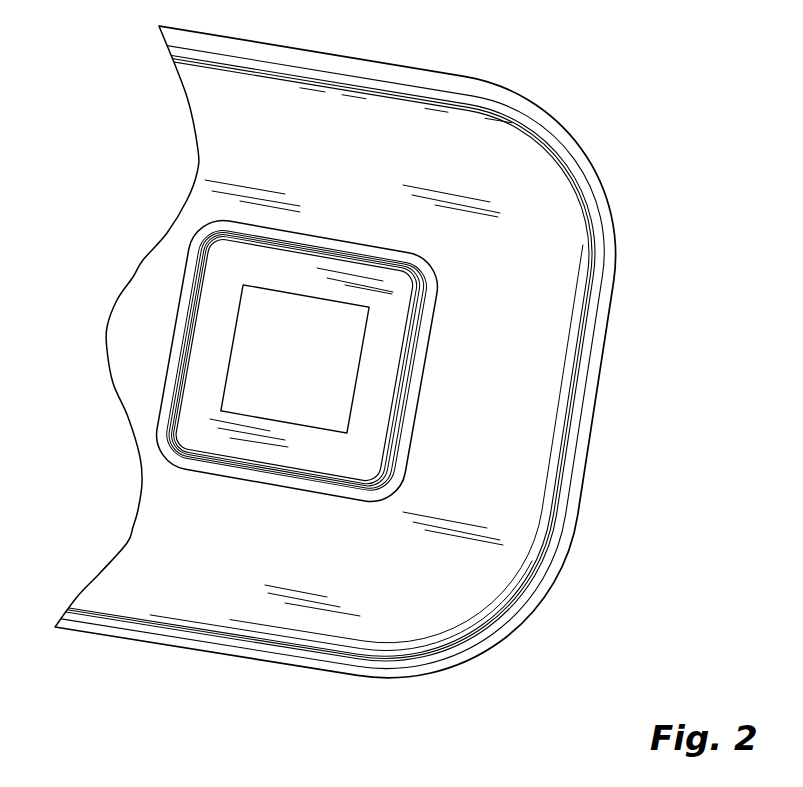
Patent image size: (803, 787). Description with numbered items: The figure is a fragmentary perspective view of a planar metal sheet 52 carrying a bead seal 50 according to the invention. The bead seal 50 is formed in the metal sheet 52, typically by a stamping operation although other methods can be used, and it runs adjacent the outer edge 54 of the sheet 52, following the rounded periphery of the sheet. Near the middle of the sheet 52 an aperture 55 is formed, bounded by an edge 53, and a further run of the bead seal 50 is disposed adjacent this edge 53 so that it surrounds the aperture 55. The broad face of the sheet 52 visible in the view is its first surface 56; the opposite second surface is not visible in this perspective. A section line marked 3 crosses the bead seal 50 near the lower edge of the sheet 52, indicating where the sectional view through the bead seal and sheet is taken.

The bead seal 50 is at (365, 87).
The metal sheet 52 is at (207, 103).
The edge surrounding aperture 53 is at (302, 298).
The outer edge 54 is at (612, 220).
The aperture 55 is at (245, 384).
The first surface 56 is at (357, 178).
The section line 3- 3 is at (253, 552).